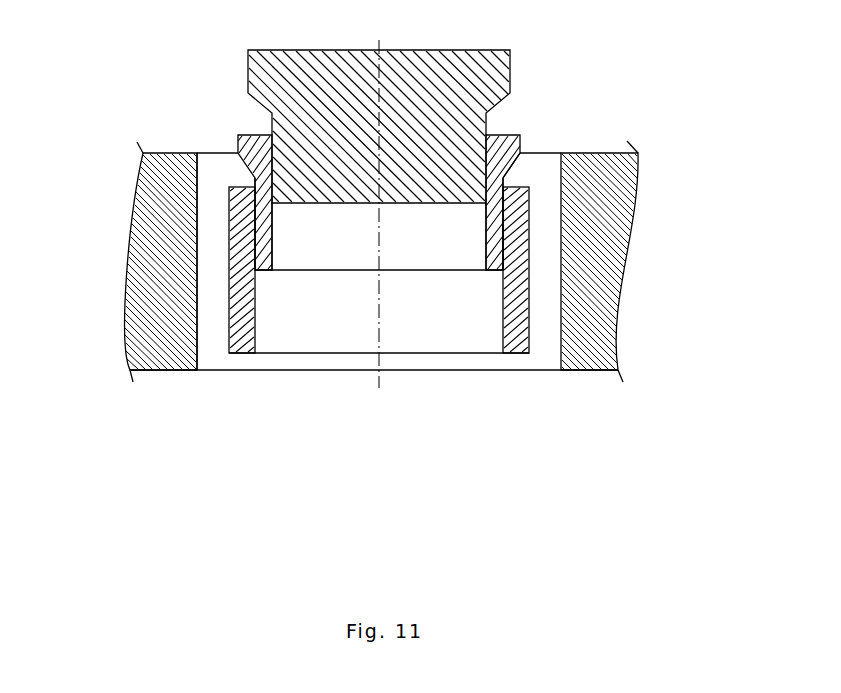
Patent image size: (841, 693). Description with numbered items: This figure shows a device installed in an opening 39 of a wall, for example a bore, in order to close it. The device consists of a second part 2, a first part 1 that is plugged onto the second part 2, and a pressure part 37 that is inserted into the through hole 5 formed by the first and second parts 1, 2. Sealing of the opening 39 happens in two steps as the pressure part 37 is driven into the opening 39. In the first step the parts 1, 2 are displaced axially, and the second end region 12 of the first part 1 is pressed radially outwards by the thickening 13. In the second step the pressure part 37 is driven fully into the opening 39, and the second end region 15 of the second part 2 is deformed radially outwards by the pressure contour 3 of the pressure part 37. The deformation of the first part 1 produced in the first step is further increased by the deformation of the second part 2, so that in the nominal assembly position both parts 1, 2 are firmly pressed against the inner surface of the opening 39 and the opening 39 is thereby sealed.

The first part 1 is at (240, 322).
The second part 2 is at (260, 217).
The pressure contour 3 is at (492, 105).
The through hole 5 is at (320, 285).
The second end region 12 is at (217, 238).
The thickening 13 is at (238, 153).
The second end region 15 is at (522, 163).
The pressure part 37 is at (457, 77).
The opening 39 is at (212, 140).